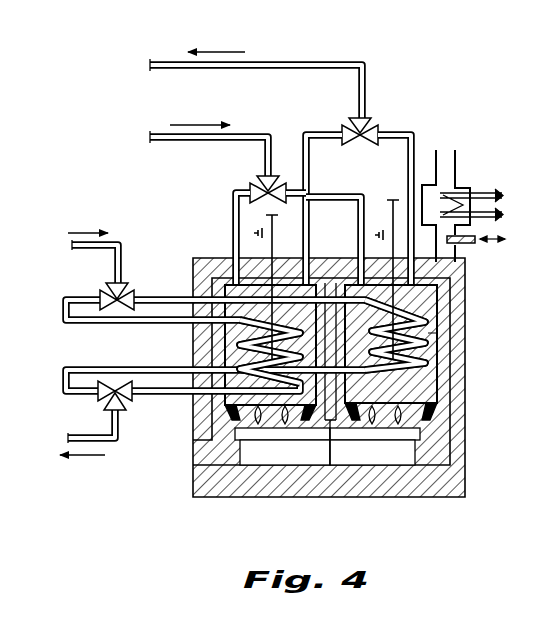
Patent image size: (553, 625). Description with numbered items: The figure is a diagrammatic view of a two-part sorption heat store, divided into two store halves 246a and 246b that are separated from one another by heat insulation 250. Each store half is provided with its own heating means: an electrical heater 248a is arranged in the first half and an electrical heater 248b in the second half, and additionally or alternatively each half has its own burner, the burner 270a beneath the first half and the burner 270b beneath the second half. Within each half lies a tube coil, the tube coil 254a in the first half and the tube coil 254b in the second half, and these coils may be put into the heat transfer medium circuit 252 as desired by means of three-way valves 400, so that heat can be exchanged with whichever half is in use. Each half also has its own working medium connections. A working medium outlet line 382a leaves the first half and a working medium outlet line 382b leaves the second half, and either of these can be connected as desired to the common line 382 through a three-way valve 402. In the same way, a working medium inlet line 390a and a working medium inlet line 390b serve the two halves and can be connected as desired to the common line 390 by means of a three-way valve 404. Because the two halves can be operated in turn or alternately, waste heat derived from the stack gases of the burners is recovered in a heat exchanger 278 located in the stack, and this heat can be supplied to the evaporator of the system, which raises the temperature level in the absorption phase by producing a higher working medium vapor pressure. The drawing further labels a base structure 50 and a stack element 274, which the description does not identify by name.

The housing base 50 is at (458, 484).
The heat transfer medium circuit 252 is at (148, 356).
The tube coil 254a is at (270, 372).
The tube coil 254b is at (425, 356).
The heat insulation 250 is at (430, 334).
The store half 246a is at (312, 282).
The store half 246b is at (440, 398).
The electrical heater 248a is at (268, 258).
The electrical heater 248b is at (400, 294).
The burner 270a is at (244, 449).
The burner 270b is at (380, 458).
The damper 274 is at (468, 250).
The heat exchanger 278 is at (455, 188).
The line 382 is at (312, 62).
The working medium outlet line 382a is at (309, 132).
The working medium outlet line 382b is at (414, 140).
The line 390 is at (250, 133).
The working medium inlet line 390a is at (233, 210).
The working medium inlet line 390b is at (334, 197).
The three-way valves 400 is at (121, 291).
The three-way valve 402 is at (368, 130).
The three-way valve 404 is at (262, 182).